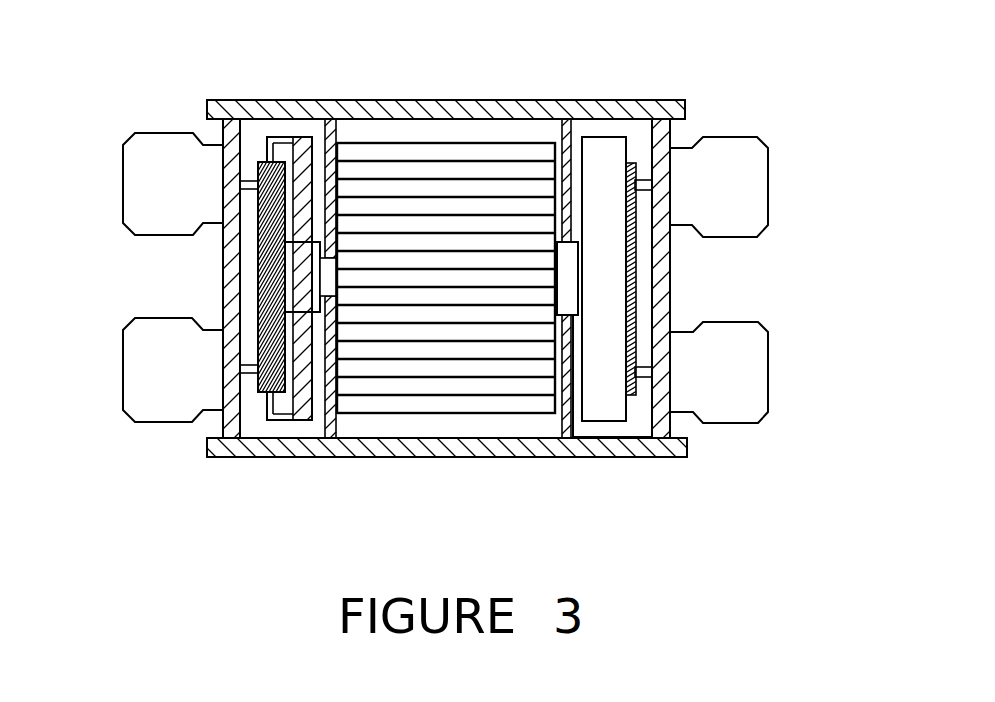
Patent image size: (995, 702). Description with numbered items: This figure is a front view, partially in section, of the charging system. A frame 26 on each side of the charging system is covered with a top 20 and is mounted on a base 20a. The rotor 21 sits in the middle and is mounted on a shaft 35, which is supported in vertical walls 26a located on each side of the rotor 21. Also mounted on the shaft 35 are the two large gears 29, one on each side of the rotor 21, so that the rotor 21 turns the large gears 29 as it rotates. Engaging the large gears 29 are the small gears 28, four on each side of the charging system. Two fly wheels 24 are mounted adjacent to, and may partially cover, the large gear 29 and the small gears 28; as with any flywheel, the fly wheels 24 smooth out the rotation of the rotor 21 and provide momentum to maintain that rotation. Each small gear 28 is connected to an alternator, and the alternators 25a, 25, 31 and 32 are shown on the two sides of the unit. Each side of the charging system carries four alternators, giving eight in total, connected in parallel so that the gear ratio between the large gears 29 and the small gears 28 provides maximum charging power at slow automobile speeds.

The top 20 is at (627, 117).
The base 20a is at (592, 447).
The rotor 21 is at (425, 383).
The fly wheel 24 is at (300, 140).
The alternator 25 is at (757, 192).
The alternator 25a is at (742, 385).
The frame 26 is at (228, 137).
The vertical wall 26a is at (329, 127).
The small gear 28 is at (263, 162).
The large gear 29 is at (262, 250).
The alternator 31 is at (145, 197).
The alternator 32 is at (150, 403).
The shaft 35 is at (332, 267).